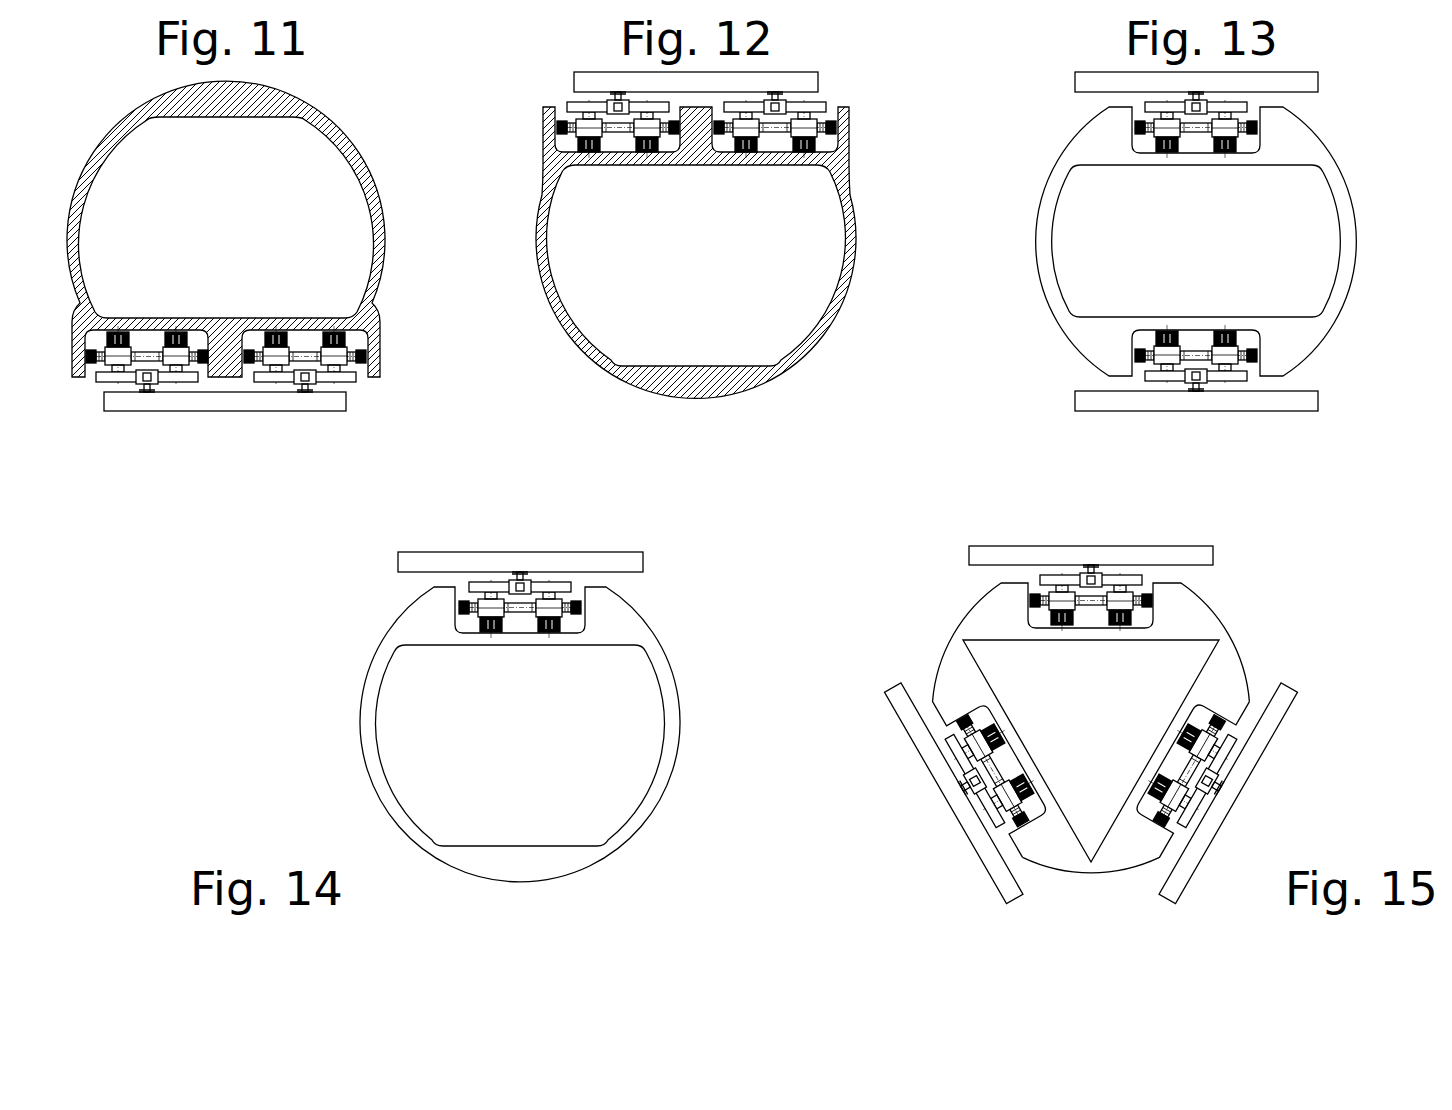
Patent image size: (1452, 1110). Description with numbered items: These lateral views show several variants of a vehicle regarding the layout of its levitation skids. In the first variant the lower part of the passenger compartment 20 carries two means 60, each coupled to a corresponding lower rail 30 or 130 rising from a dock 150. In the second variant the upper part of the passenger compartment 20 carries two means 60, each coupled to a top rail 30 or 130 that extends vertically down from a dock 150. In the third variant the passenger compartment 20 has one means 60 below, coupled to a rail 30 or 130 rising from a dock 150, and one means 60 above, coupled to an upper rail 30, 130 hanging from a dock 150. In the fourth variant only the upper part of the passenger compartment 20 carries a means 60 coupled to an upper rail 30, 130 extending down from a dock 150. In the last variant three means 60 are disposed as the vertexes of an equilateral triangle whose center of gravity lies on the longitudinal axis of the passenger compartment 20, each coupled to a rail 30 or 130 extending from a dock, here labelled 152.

In FIG. 11, the passenger compartment 20 is at (376, 228).
In FIG. 12, the passenger compartment 20 is at (843, 262).
In FIG. 13, the passenger compartment 20 is at (1342, 230).
In FIG. 14, the passenger compartment 20 is at (666, 736).
In FIG. 15, the passenger compartment 20 is at (1212, 681).
In FIG. 11, the rail 30 is at (143, 390).
In FIG. 12, the rail 30 is at (612, 110).
In FIG. 13, the rail 30 is at (1198, 110).
In FIG. 14, the rail 30 is at (517, 590).
In FIG. 15, the rail 30 is at (1091, 575).
In FIG. 11, the means 60 is at (176, 330).
In FIG. 12, the means 60 is at (588, 142).
In FIG. 13, the means 60 is at (1176, 330).
In FIG. 14, the means 60 is at (499, 595).
In FIG. 15, the means 60 is at (1053, 602).
In FIG. 11, the rail 130 is at (219, 441).
In FIG. 12, the rail 130 is at (702, 166).
In FIG. 13, the rail 130 is at (1205, 302).
In FIG. 14, the rail 130 is at (526, 646).
In FIG. 15, the rail 130 is at (1020, 643).
In FIG. 11, the dock 150 is at (232, 403).
In FIG. 12, the dock 150 is at (818, 78).
In FIG. 13, the dock 150 is at (1318, 82).
In FIG. 14, the dock 150 is at (643, 562).
In FIG. 15, the rail plate segment 152 is at (1213, 555).